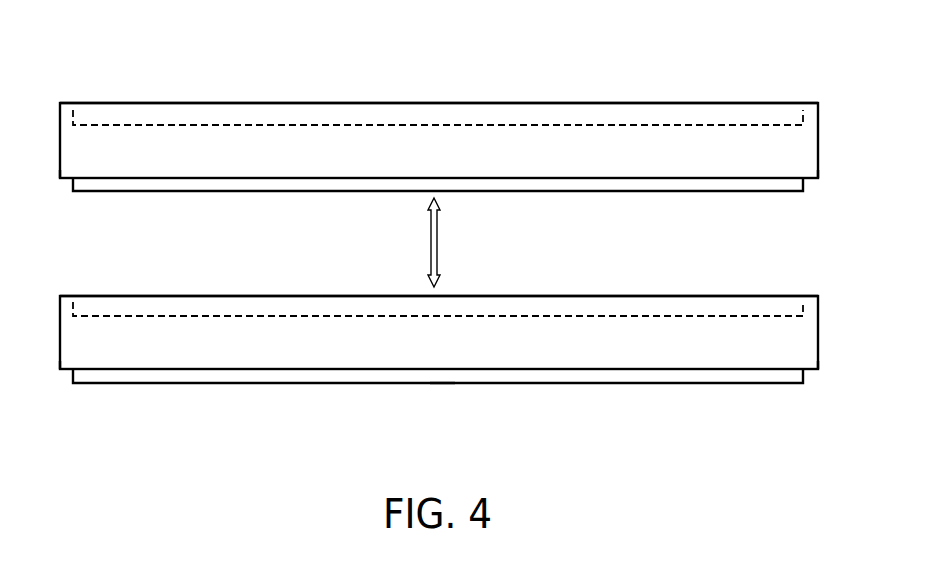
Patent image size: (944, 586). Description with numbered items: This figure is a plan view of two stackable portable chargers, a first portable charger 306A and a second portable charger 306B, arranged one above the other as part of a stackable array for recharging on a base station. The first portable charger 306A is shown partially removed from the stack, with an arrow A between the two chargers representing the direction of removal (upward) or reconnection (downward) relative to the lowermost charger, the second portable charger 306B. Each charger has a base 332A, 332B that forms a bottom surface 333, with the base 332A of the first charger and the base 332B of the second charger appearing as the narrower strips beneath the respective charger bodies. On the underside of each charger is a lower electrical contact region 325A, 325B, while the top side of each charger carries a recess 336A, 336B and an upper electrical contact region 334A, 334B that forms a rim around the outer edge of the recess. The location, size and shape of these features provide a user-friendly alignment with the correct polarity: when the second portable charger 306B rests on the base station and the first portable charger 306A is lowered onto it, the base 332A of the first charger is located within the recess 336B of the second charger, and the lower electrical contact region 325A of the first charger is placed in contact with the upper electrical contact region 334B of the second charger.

The first portable charger 306A is at (818, 152).
The second portable charger 306B is at (818, 336).
The lower electrical contact region 325A is at (60, 180).
The lower electrical contact region 325B is at (60, 371).
The base 332A is at (678, 192).
The base 332B is at (677, 383).
The bottom surface 333 is at (442, 386).
The upper electrical contact region 334A is at (60, 101).
The upper electrical contact region 334B is at (60, 294).
The recess 336A is at (322, 110).
The recess 336B is at (545, 300).
The arrow A is at (444, 242).